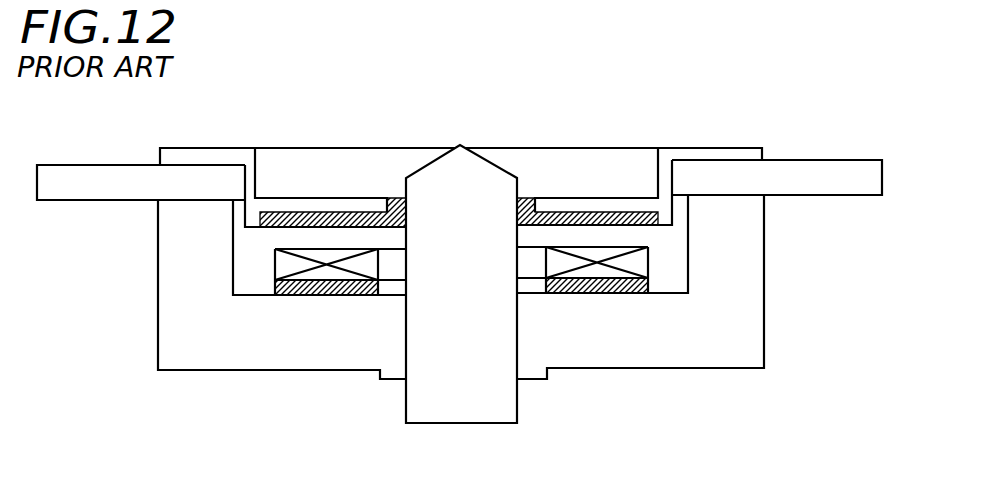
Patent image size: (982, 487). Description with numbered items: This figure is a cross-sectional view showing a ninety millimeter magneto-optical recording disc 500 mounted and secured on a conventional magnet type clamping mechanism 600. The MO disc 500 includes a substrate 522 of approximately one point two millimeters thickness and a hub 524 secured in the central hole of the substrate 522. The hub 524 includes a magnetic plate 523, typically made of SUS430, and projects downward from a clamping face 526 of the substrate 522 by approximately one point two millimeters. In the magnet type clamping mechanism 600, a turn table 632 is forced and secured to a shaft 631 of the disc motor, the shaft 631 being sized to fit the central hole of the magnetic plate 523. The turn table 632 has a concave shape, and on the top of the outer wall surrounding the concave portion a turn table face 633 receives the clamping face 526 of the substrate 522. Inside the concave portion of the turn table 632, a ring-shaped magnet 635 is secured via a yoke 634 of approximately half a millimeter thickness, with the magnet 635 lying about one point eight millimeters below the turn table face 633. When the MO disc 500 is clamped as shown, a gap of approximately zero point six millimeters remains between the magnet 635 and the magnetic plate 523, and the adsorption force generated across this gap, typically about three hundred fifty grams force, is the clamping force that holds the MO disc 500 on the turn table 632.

The magneto-optical recording disc 500 is at (820, 140).
The substrate 522 is at (92, 180).
The magnetic plate 523 is at (325, 212).
The hub 524 is at (255, 168).
The clamping face 526 is at (185, 201).
The magnet type clamping mechanism 600 is at (784, 375).
The shaft 631 is at (483, 193).
The turn table 632 is at (747, 243).
The turn table face 633 is at (722, 197).
The yoke 634 is at (607, 295).
The magnet 635 is at (599, 253).